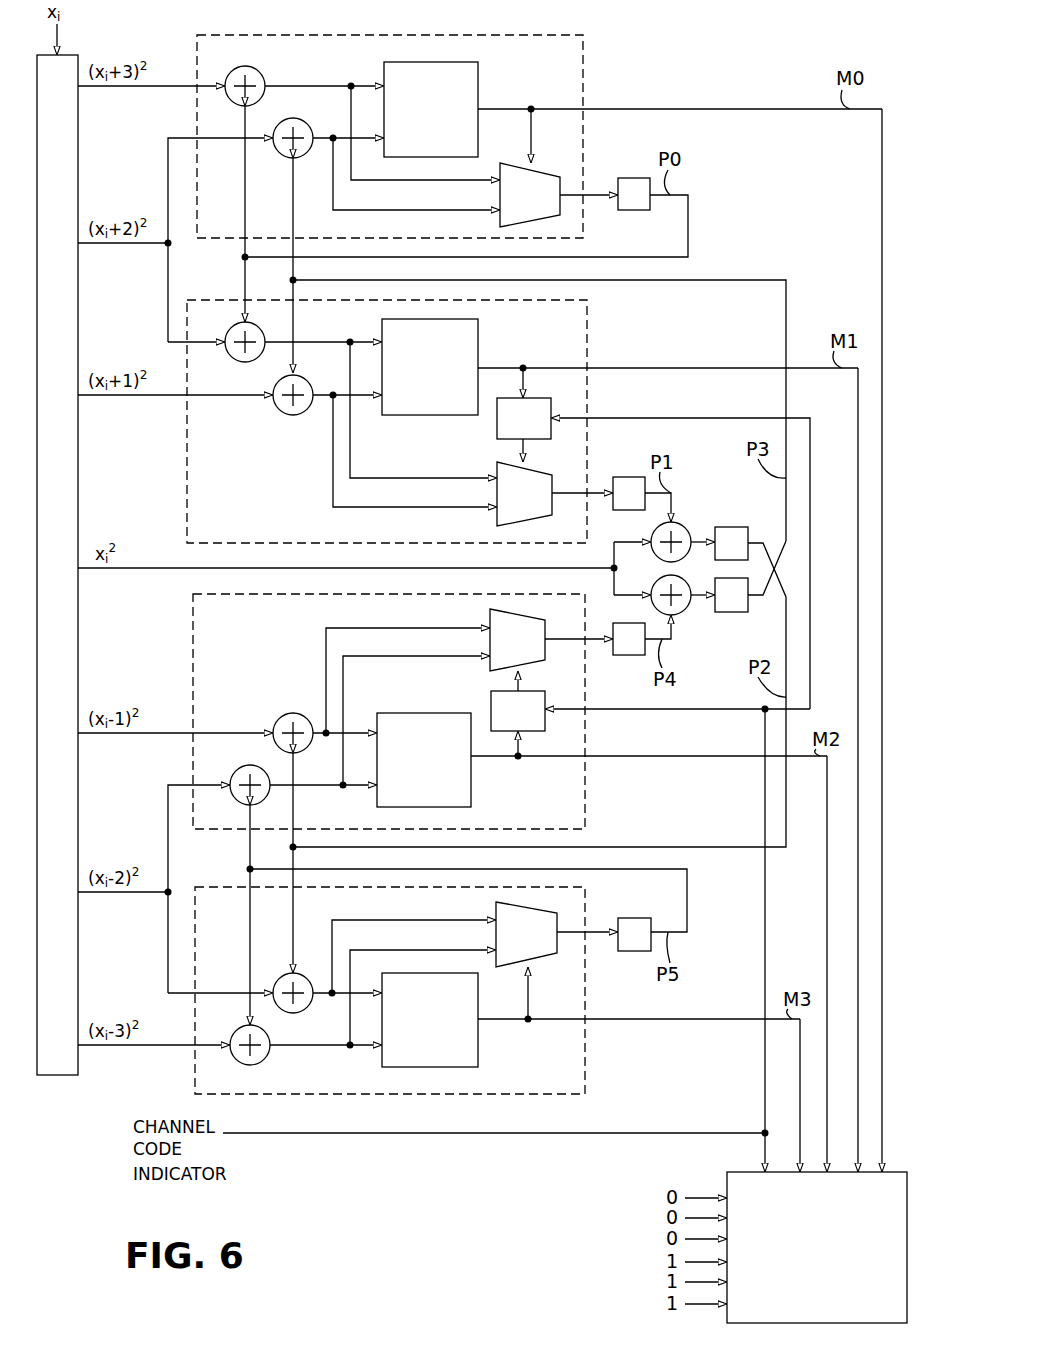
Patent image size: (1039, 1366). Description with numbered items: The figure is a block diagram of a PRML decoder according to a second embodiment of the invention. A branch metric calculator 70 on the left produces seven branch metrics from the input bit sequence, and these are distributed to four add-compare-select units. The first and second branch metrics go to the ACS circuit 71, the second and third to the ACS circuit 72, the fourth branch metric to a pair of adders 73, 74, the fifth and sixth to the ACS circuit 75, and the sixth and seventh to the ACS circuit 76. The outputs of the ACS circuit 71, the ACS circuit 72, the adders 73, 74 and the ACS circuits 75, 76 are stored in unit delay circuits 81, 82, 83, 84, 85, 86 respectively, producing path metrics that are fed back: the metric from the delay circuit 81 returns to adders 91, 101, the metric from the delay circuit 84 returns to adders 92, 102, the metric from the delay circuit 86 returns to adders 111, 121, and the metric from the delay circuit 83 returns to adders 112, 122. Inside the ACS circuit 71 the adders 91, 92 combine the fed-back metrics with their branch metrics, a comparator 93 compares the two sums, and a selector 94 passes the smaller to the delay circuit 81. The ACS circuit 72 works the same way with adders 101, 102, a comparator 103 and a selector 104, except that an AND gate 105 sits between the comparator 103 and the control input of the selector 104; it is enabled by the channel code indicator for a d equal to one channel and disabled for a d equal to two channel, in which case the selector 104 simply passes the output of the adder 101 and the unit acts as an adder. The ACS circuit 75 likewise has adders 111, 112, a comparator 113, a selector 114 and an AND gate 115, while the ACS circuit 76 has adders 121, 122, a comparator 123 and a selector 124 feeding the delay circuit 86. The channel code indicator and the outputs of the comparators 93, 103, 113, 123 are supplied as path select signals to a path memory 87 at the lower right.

The branch metric calculator 70 is at (58, 1077).
The ACS circuit 71 is at (197, 60).
The ACS circuit 72 is at (187, 470).
The adder 73 is at (686, 529).
The adder 74 is at (685, 611).
The ACS circuit 75 is at (193, 648).
The ACS circuit 76 is at (195, 1092).
The unit delay circuit 81 is at (634, 178).
The unit delay circuit 82 is at (620, 477).
The unit delay circuit 83 is at (725, 527).
The unit delay circuit 84 is at (730, 612).
The unit delay circuit 85 is at (630, 655).
The unit delay circuit 86 is at (634, 951).
The path memory 87 is at (727, 1187).
The adder 91 is at (231, 108).
The adder 92 is at (283, 155).
The comparator 93 is at (478, 92).
The selector 94 is at (552, 177).
The adder 101 is at (252, 360).
The adder 102 is at (300, 414).
The comparator 103 is at (415, 415).
The selector 104 is at (497, 470).
The AND gate 105 is at (551, 412).
The adder 111 is at (237, 771).
The adder 112 is at (293, 713).
The comparator 113 is at (388, 713).
The selector 114 is at (490, 670).
The AND gate 115 is at (553, 689).
The adder 121 is at (236, 1031).
The adder 122 is at (295, 1013).
The comparator 123 is at (478, 1050).
The selector 124 is at (547, 967).